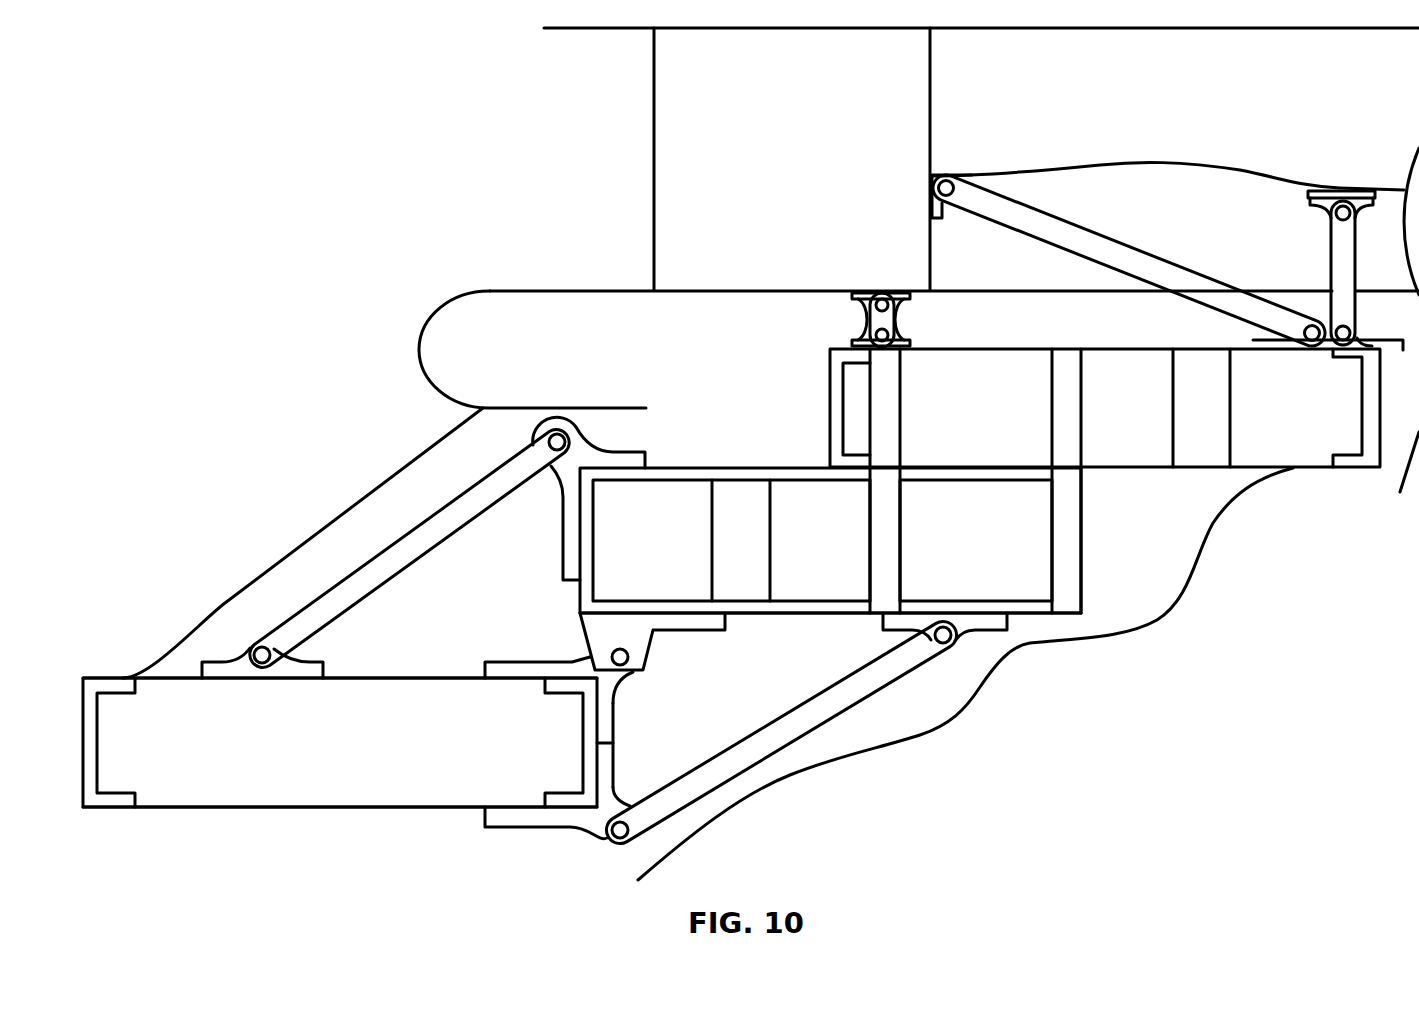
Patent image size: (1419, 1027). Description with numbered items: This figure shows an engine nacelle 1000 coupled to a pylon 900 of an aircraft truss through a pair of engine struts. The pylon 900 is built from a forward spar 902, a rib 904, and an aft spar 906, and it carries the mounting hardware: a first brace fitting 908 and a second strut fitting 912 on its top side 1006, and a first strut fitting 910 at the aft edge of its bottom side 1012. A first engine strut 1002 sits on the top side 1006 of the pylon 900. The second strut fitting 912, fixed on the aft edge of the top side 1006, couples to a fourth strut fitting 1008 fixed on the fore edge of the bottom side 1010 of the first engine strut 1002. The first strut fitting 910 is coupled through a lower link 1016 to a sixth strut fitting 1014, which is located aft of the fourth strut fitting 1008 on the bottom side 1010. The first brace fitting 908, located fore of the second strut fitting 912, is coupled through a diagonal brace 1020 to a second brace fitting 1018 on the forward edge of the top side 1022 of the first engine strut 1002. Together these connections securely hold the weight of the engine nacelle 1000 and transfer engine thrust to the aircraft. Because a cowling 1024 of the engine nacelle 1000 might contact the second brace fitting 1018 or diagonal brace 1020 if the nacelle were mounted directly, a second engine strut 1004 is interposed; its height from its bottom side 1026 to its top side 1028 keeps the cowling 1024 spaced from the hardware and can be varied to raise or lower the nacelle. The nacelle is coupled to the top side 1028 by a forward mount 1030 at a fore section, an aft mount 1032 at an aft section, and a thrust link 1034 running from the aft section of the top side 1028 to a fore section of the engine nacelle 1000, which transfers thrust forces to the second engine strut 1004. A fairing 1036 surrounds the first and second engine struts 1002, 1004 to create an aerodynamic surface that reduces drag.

The pylon 900 is at (195, 810).
The forward spar 902 is at (107, 800).
The rib 904 is at (362, 777).
The aft spar 906 is at (565, 787).
The first brace fitting 908 is at (313, 672).
The first strut fitting 910 is at (547, 818).
The second strut fitting 912 is at (607, 690).
The engine nacelle 1000 is at (668, 100).
The first engine strut 1002 is at (1027, 577).
The second engine strut 1004 is at (1250, 432).
The top side 1006 is at (417, 678).
The fourth strut fitting 1008 is at (640, 660).
The bottom side 1010 is at (803, 615).
The bottom side 1012 is at (270, 810).
The sixth strut fitting 1014 is at (980, 622).
The lower link 1016 is at (810, 737).
The second brace fitting 1018 is at (612, 452).
The diagonal brace 1020 is at (318, 588).
The top side 1022 is at (773, 467).
The cowling 1024 is at (430, 312).
The bottom side 1026 is at (1148, 472).
The top side 1028 is at (1140, 348).
The forward mount 1030 is at (866, 321).
The aft mount 1032 is at (1335, 240).
The thrust link 1034 is at (1127, 257).
The fairing 1036 is at (218, 600).